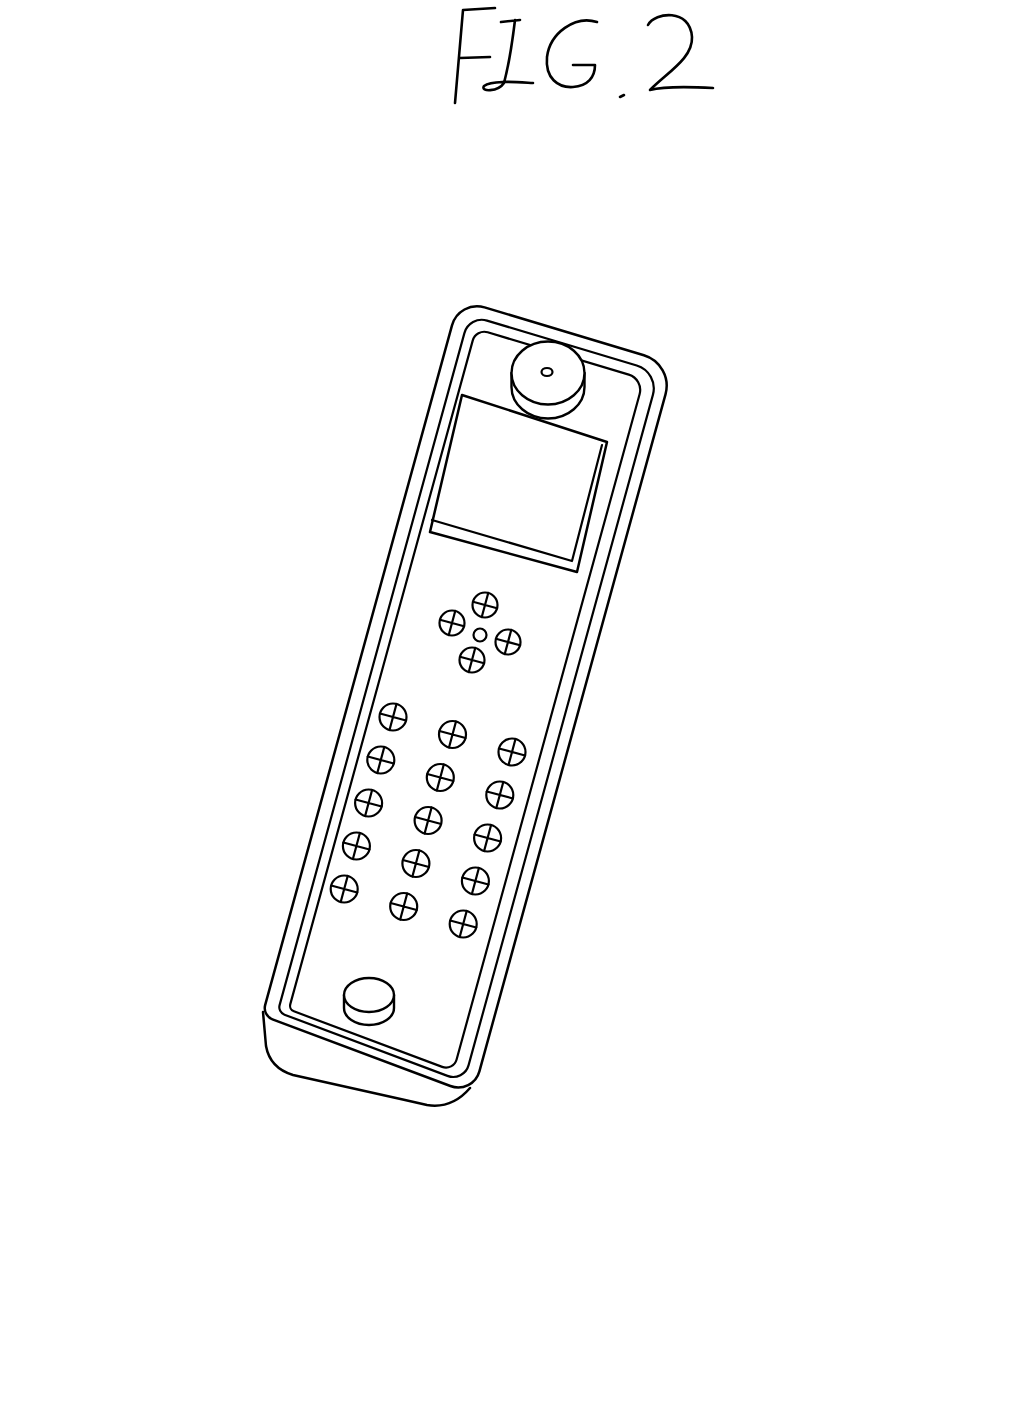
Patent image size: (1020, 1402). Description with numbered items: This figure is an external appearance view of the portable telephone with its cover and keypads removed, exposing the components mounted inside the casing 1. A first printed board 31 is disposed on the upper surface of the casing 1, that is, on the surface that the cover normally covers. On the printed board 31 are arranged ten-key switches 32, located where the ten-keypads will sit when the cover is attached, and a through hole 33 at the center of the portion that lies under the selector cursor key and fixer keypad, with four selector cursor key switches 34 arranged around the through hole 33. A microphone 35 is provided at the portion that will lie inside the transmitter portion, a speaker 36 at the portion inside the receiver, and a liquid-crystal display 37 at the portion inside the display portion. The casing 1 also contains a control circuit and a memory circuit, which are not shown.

The casing 1 is at (473, 1095).
The first printed board 31 is at (648, 374).
The ten-key switches 32 is at (480, 912).
The through hole 33 is at (468, 640).
The selector cursor key switches 34 is at (485, 660).
The microphone 35 is at (357, 977).
The speaker 36 is at (583, 343).
The liquid-crystal display 37 is at (464, 396).